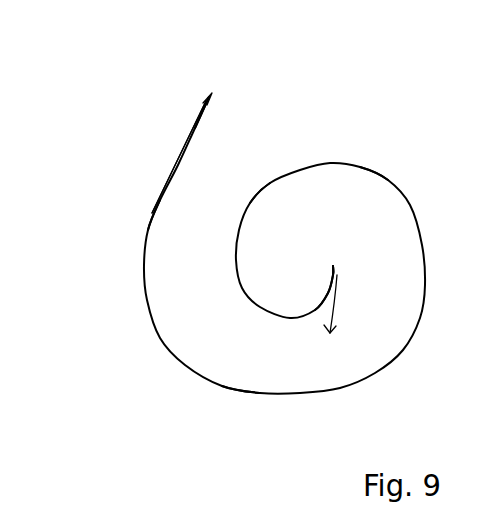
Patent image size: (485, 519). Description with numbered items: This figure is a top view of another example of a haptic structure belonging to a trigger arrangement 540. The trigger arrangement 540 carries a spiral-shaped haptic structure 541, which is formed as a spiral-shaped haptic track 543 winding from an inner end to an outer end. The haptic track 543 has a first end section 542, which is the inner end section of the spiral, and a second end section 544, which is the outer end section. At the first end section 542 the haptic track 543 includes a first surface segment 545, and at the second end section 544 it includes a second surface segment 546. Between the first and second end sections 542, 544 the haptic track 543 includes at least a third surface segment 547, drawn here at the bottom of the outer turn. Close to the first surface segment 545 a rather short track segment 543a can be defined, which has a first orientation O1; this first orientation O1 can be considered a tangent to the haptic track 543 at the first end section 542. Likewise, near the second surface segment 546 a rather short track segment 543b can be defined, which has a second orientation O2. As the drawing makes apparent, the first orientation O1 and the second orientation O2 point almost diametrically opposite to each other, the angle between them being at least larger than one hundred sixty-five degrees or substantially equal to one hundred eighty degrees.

The trigger arrangement 540 is at (327, 107).
The spiral-shaped haptic structure 541 is at (243, 160).
The first end section 542 is at (334, 262).
The spiral-shaped haptic track 543 is at (388, 168).
The track segment 543a is at (327, 283).
The track segment 543b is at (146, 176).
The second end section 544 is at (174, 130).
The first surface segment 545 is at (338, 279).
The second surface segment 546 is at (178, 148).
The third surface segment 547 is at (240, 393).
The first orientation O1 is at (347, 304).
The second orientation O2 is at (205, 156).